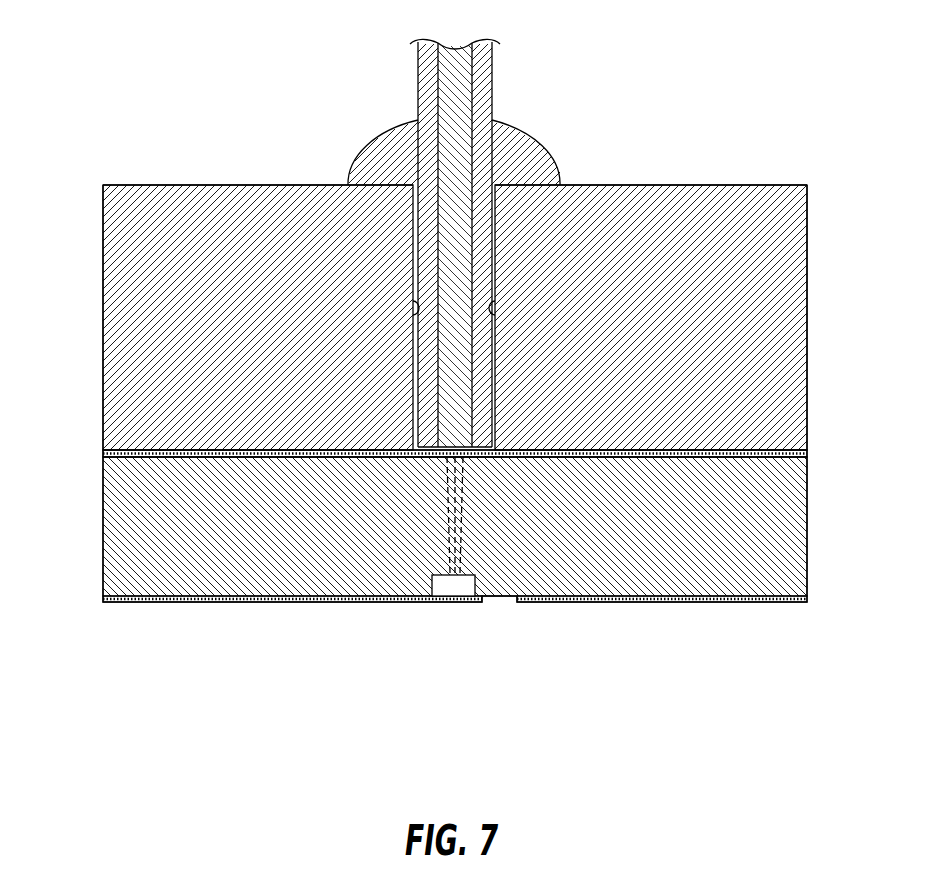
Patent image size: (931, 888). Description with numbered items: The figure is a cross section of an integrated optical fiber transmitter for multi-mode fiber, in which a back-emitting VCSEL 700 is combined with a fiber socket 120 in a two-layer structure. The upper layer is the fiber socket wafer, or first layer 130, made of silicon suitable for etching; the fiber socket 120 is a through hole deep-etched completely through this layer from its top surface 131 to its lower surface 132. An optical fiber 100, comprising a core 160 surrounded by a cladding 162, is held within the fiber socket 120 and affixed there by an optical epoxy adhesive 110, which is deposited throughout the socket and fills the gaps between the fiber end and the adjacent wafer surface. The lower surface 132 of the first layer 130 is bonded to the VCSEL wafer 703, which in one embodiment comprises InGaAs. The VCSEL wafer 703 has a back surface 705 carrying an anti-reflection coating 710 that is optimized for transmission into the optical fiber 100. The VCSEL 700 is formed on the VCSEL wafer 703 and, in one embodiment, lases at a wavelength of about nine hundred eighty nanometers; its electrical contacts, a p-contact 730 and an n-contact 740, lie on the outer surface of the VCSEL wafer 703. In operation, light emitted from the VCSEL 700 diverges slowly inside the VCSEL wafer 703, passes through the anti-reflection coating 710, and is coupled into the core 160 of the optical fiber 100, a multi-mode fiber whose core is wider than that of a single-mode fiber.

The optical fiber 100 is at (452, 224).
The core 160 is at (418, 64).
The cladding 162 is at (425, 110).
The adhesive 110 is at (385, 155).
The top surface 131 is at (228, 184).
The first layer 130 is at (110, 255).
The fiber socket 120 is at (412, 300).
The back surface 705 is at (305, 455).
The anti-reflection coating 710 is at (105, 449).
The lower surface 132 is at (130, 452).
The VCSEL wafer 703 is at (123, 545).
The p-contact 730 is at (228, 600).
The VCSEL 700 is at (445, 598).
The n-contact 740 is at (635, 600).